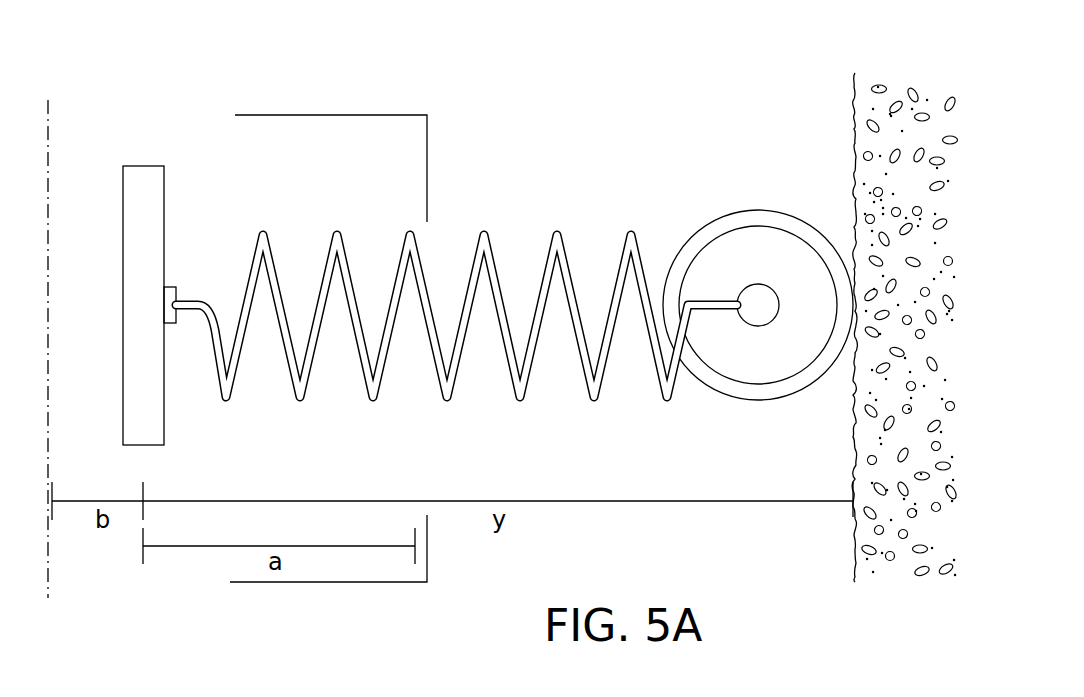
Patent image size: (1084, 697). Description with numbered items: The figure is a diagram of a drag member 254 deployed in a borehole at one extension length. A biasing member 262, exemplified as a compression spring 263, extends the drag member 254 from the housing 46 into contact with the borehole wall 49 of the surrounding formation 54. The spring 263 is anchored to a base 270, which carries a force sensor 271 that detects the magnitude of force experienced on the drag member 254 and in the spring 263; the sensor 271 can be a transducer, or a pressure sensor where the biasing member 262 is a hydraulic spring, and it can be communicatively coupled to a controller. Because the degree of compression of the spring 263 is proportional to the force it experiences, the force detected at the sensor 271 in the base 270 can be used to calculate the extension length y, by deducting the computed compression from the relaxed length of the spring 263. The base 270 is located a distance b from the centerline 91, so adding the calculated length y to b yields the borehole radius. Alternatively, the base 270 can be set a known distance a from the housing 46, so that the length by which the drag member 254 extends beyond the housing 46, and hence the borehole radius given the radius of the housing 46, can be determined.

The centerline 91 is at (51, 97).
The formation 54 is at (895, 115).
The borehole wall 49 is at (852, 555).
The drag member 254 is at (748, 210).
The base 270 is at (143, 166).
The force sensor 271 is at (171, 287).
The biasing member 262 is at (456, 271).
The spring 263 is at (484, 234).
The housing 46 is at (383, 113).